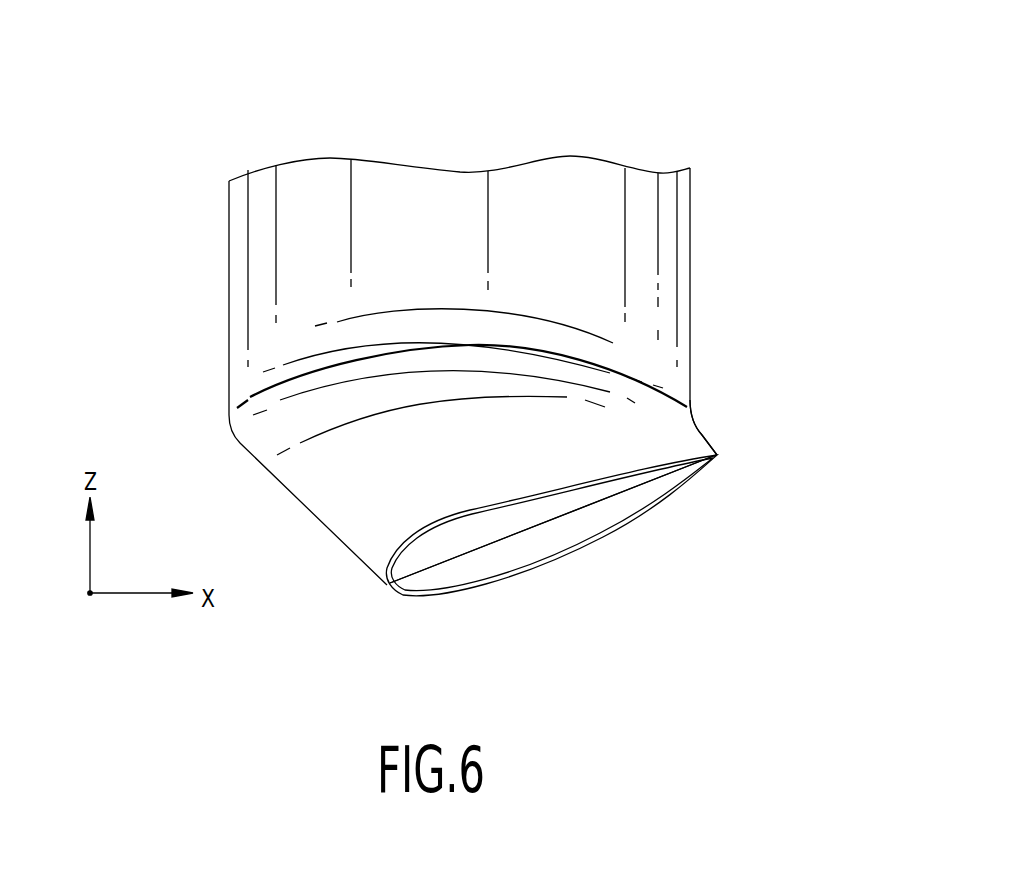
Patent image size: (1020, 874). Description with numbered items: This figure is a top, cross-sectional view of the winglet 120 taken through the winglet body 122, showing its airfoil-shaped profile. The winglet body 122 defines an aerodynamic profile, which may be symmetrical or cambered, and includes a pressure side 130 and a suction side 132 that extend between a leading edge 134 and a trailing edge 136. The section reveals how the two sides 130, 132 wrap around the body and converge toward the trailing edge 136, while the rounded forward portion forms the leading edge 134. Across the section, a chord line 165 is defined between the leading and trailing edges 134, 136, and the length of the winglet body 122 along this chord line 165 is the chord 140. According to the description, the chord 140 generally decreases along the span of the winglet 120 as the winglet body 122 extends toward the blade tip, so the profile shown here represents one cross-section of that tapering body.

The winglet 120 is at (733, 106).
The winglet body 122 is at (228, 208).
The pressure side 130 is at (412, 193).
The suction side 132 is at (472, 593).
The leading edge 134 is at (303, 510).
The trailing edge 136 is at (697, 428).
The chord 140 is at (555, 520).
The chord line 165 is at (553, 519).